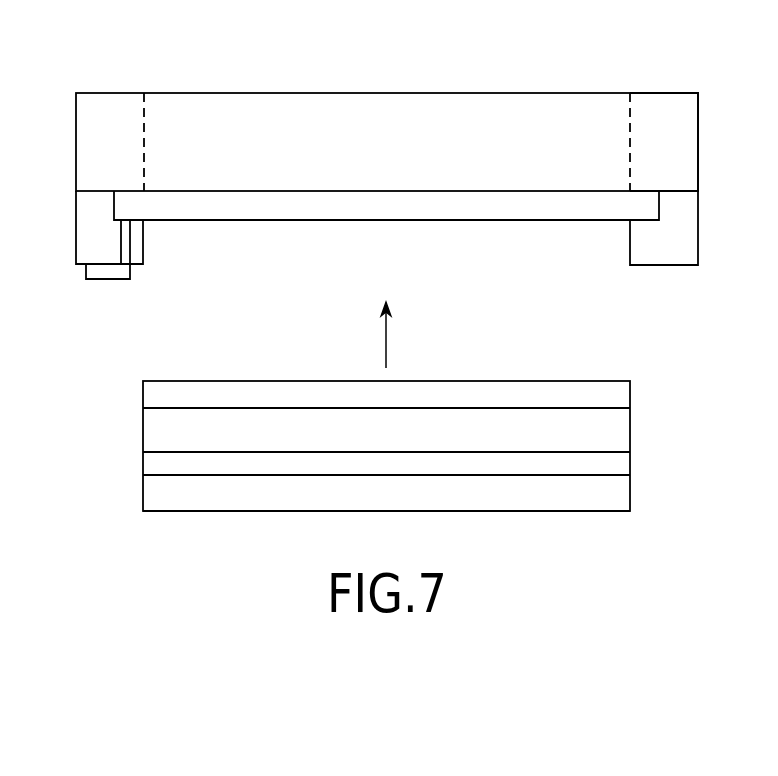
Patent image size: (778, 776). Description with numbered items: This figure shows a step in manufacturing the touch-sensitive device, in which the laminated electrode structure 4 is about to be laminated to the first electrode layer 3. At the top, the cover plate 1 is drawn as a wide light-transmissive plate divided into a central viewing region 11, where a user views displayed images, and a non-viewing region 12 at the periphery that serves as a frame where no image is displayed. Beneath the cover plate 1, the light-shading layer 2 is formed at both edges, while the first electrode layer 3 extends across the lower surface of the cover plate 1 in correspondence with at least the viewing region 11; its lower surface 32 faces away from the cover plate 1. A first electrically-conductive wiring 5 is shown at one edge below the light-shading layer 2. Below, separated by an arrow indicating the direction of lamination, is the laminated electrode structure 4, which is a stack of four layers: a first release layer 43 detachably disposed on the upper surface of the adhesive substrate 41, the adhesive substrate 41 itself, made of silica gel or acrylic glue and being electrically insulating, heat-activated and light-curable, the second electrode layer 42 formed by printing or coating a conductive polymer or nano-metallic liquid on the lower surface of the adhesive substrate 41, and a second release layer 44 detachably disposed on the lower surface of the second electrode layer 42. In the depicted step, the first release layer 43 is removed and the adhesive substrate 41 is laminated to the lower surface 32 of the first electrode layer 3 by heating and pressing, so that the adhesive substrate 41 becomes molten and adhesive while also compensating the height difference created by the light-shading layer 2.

The cover plate 1 is at (692, 34).
The viewing region 11 is at (583, 117).
The non-viewing region 12 is at (660, 108).
The light-shading layer 2 is at (89, 244).
The first electrode layer 3 is at (452, 207).
The lower surface of the first electrode layer 32 is at (293, 220).
The laminated electrode structure 4 is at (692, 375).
The adhesive substrate 41 is at (620, 419).
The second electrode layer 42 is at (620, 465).
The first release layer 43 is at (617, 393).
The second release layer 44 is at (620, 493).
The first electrically-conductive wiring 5 is at (115, 279).